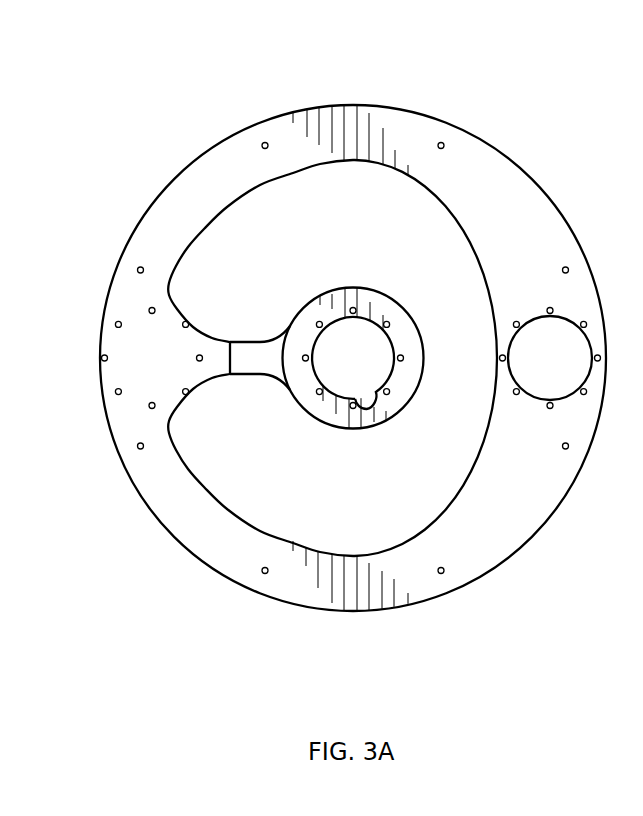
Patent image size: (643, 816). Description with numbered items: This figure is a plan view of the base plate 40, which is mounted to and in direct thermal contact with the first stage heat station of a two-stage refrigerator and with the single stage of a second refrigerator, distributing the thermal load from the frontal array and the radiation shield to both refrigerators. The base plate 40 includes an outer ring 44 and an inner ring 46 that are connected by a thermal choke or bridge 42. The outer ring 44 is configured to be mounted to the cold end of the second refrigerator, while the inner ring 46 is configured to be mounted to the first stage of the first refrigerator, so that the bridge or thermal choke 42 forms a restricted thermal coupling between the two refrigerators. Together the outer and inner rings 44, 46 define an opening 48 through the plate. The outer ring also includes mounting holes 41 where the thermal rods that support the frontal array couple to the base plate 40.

The base plate 40 is at (350, 378).
The mounting holes 41 is at (265, 146).
The thermal choke 42 is at (256, 342).
The outer ring 44 is at (521, 548).
The inner ring 46 is at (354, 428).
The opening 48 is at (440, 252).